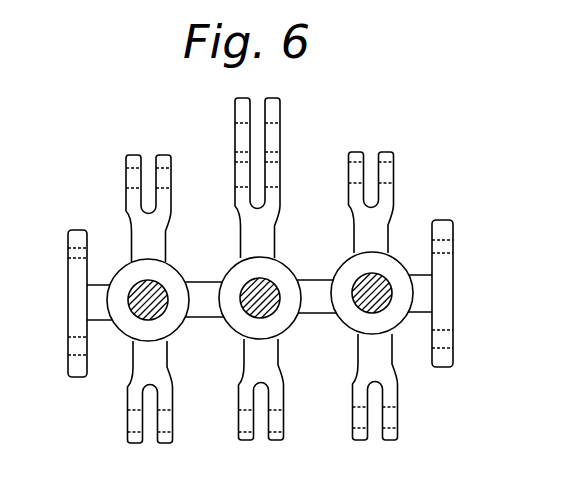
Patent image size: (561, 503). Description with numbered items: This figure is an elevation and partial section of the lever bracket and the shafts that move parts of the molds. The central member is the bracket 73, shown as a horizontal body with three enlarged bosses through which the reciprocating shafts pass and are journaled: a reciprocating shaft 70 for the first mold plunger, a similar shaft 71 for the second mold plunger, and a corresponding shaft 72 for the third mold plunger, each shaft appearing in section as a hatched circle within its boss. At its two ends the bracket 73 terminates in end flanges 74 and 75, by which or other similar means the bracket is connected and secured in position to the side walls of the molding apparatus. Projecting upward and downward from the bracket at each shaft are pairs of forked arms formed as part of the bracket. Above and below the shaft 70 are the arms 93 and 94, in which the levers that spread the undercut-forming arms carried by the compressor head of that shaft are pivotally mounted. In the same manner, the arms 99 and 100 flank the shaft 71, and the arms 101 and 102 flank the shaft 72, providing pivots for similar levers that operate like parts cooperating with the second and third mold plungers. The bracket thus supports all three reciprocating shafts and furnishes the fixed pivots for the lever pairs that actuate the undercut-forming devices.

The reciprocating shaft 70 is at (157, 285).
The reciprocating shaft 71 is at (272, 287).
The reciprocating shaft 72 is at (380, 280).
The bracket 73 is at (203, 292).
The end flange 74 is at (77, 313).
The end flange 75 is at (445, 312).
The arm 93 is at (140, 226).
The arm 94 is at (147, 358).
The arm 99 is at (262, 223).
The arm 100 is at (262, 363).
The arm 101 is at (396, 202).
The arm 102 is at (378, 358).